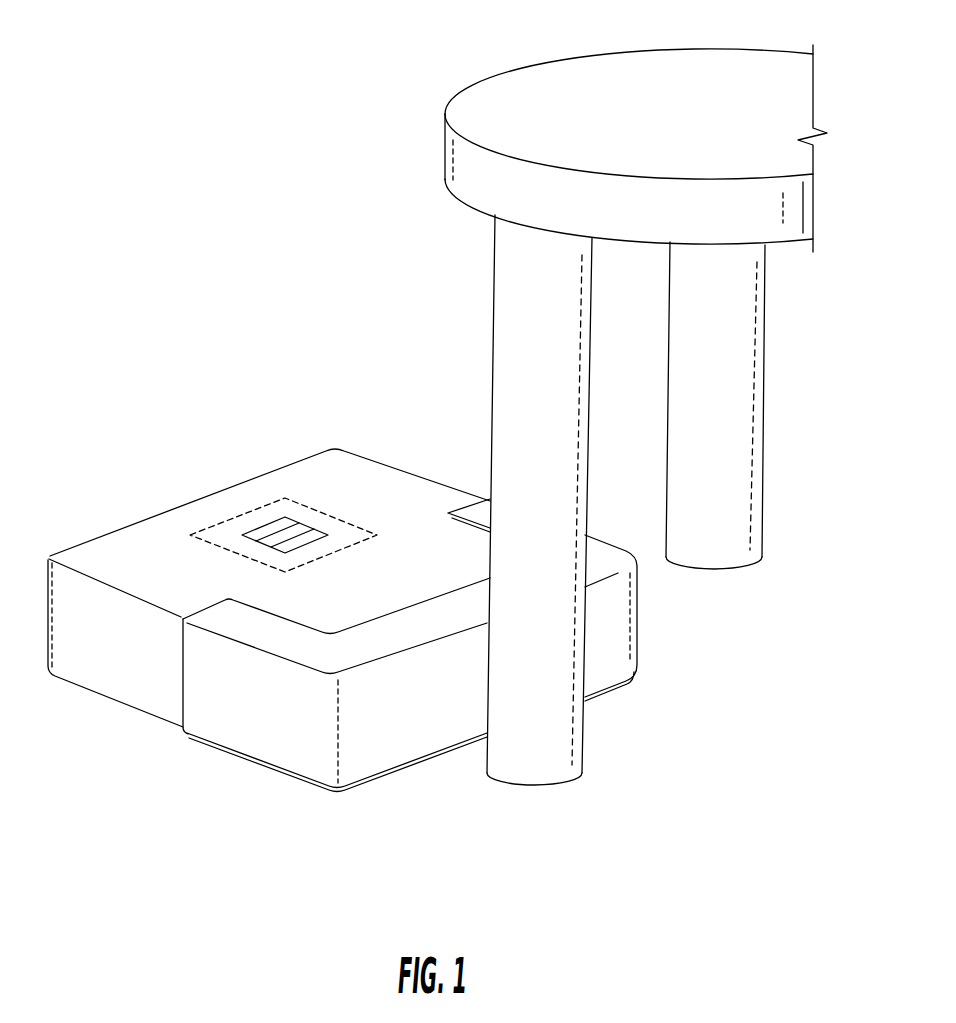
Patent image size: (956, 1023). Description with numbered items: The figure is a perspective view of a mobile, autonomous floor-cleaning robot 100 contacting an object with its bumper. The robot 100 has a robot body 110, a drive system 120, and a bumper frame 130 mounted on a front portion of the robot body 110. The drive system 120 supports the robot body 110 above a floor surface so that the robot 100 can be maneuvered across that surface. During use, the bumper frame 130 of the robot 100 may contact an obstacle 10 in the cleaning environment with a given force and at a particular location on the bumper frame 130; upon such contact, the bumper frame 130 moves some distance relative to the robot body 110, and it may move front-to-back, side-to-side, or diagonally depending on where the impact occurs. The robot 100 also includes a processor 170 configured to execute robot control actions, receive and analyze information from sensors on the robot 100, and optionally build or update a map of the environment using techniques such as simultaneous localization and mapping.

The obstacle 10 is at (452, 160).
The mobile, autonomous floor-cleaning robot 100 is at (341, 608).
The robot body 110 is at (124, 672).
The drive system 120 is at (261, 787).
The bumper frame 130 is at (390, 751).
The processor 170 is at (250, 512).